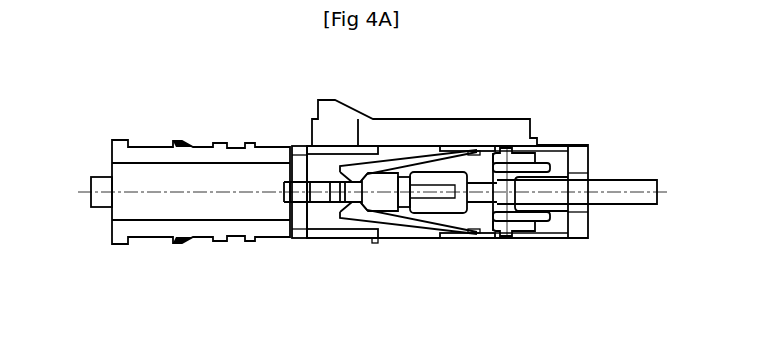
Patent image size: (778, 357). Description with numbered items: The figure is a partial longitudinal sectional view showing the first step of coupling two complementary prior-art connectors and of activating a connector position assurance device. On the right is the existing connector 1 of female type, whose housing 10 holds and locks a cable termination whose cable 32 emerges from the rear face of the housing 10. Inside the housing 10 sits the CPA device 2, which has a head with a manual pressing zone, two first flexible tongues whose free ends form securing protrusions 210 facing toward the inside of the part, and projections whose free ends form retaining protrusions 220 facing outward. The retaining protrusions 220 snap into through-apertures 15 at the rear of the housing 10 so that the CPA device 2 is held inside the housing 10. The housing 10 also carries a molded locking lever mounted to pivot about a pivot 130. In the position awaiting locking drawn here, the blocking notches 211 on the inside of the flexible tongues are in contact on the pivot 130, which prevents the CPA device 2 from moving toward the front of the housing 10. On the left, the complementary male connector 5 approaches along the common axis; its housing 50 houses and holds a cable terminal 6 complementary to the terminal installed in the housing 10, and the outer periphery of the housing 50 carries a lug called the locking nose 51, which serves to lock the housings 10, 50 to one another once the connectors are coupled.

The connector 1 is at (524, 100).
The CPA device 2 is at (518, 197).
The complementary male connector 5 is at (168, 124).
The cable terminal 6 is at (102, 202).
The housing 10 is at (518, 133).
The through-apertures 15 is at (480, 150).
The cable 32 is at (617, 199).
The housing 50 is at (141, 203).
The locking nose 51 is at (330, 202).
The pivot 130 is at (402, 198).
The securing protrusion 210 is at (357, 177).
The blocking notch 211 is at (413, 172).
The retaining protrusion 220 is at (521, 158).